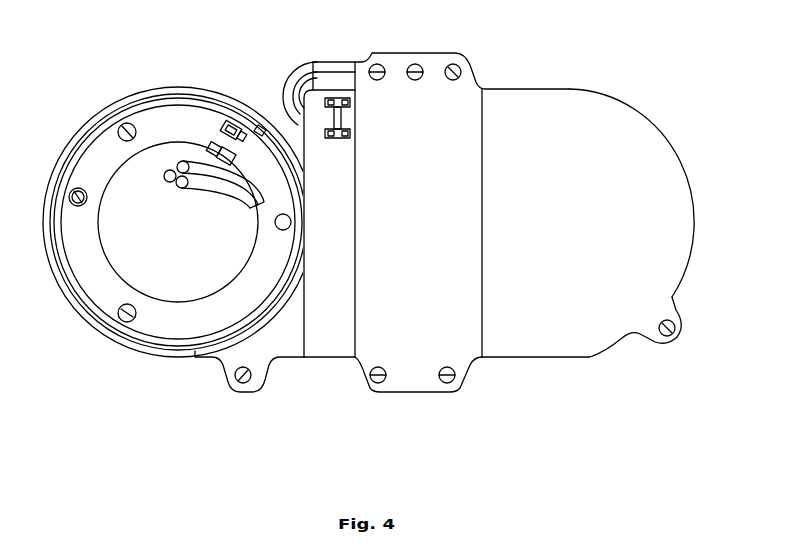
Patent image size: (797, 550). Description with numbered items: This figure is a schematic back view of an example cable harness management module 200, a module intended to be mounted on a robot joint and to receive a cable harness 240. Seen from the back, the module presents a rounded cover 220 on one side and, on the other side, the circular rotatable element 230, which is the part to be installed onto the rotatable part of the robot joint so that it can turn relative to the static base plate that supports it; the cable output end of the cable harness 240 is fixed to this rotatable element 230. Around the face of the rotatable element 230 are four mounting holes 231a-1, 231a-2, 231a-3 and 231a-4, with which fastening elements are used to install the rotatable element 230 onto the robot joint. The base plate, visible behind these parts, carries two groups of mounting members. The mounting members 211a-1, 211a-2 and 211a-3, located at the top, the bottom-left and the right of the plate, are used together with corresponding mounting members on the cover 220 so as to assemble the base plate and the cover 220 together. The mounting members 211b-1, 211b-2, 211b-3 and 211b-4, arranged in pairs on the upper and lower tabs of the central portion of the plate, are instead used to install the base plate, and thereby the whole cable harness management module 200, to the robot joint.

The cable harness management module 200 is at (689, 67).
The cover 220 is at (681, 217).
The rotatable element 230 is at (82, 255).
The cable harness 240 is at (283, 72).
The mounting member 211a-1 is at (461, 72).
The mounting member 211a-2 is at (239, 381).
The mounting member 211a-3 is at (675, 333).
The mounting member 211b-1 is at (416, 72).
The mounting member 211b-2 is at (375, 72).
The mounting member 211b-3 is at (372, 381).
The mounting member 211b-4 is at (452, 381).
The mounting hole 231a-1 is at (125, 131).
The mounting hole 231a-2 is at (84, 196).
The mounting hole 231a-3 is at (134, 309).
The mounting hole 231a-4 is at (290, 221).